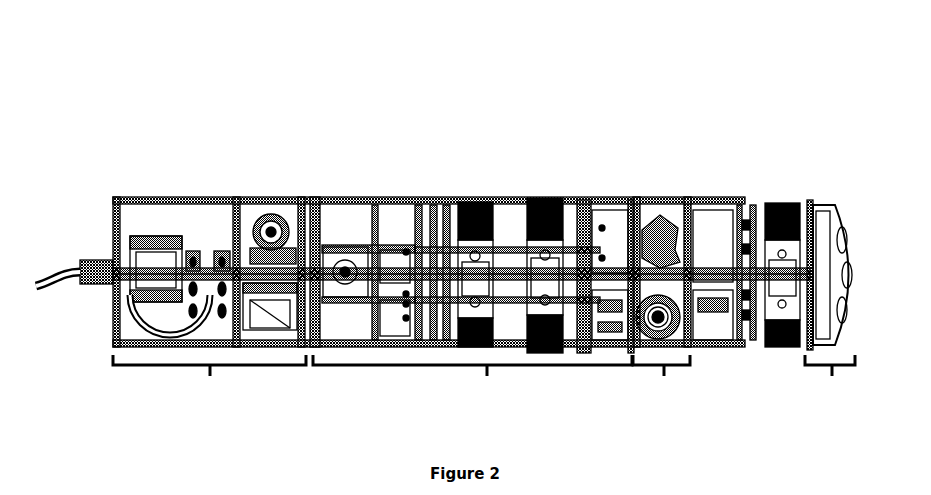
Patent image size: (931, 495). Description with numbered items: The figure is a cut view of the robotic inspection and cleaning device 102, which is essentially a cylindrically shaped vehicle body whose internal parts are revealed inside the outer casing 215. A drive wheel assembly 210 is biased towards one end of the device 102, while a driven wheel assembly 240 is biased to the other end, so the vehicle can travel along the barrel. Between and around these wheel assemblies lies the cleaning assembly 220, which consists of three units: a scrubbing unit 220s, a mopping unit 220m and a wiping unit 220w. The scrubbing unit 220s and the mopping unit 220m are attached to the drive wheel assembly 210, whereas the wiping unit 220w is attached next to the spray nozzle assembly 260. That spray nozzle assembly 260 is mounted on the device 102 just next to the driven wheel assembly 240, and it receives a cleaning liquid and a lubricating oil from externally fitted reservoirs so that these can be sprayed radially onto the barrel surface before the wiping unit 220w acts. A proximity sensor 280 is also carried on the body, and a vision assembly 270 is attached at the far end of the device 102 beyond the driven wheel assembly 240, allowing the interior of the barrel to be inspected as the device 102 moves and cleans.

The robotic inspection and cleaning device 102 is at (460, 73).
The outer casing 215 is at (604, 196).
The drive wheel assembly 210 is at (219, 390).
The cleaning assembly 220 is at (486, 390).
The scrubbing unit 220s is at (474, 191).
The mopping unit 220m is at (542, 190).
The proximity sensor 280 is at (607, 195).
The driven wheel assembly 240 is at (663, 390).
The spray nozzle assembly 260 is at (752, 345).
The wiping unit 220w is at (785, 198).
The vision assembly 270 is at (831, 390).